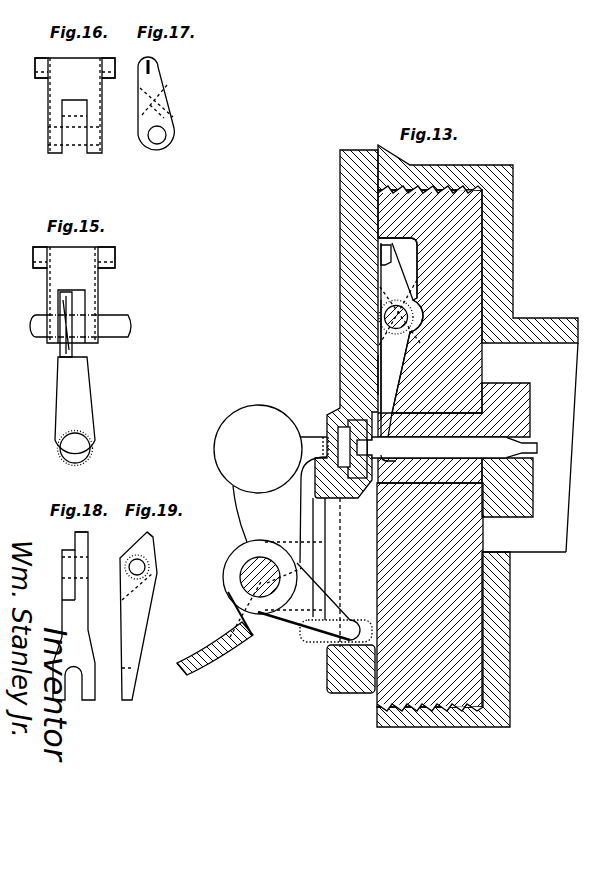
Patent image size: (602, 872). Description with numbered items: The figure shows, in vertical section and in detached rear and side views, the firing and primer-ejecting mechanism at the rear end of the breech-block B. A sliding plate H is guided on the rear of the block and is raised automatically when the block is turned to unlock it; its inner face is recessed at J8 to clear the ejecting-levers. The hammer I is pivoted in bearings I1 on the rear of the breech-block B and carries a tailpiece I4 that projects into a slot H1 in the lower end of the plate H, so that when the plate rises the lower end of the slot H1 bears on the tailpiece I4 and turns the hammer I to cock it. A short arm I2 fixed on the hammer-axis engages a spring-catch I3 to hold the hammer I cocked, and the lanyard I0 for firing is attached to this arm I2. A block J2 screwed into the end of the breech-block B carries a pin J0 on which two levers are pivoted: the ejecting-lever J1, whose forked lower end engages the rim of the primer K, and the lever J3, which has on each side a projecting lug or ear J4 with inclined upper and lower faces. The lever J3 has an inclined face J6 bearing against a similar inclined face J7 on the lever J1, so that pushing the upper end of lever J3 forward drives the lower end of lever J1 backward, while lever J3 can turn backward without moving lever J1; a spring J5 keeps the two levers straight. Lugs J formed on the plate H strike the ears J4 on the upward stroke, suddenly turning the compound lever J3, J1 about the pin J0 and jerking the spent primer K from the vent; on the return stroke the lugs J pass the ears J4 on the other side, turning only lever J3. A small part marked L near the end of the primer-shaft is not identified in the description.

In FIG. 13, the breech-block B is at (477, 436).
In FIG. 13, the sliding plate H is at (346, 324).
In FIG. 13, the slot H1 is at (344, 595).
In FIG. 13, the hammer I is at (270, 484).
In FIG. 13, the lanyard I0 is at (197, 664).
In FIG. 13, the bearings I1 is at (291, 590).
In FIG. 13, the short arm I2 is at (248, 641).
In FIG. 13, the spring-catch I3 is at (297, 629).
In FIG. 13, the tailpiece I4 is at (301, 592).
In FIG. 13, the lugs J is at (372, 360).
In FIG. 15, the pin J0 is at (80, 326).
In FIG. 13, the pin J0 is at (383, 316).
In FIG. 15, the ejecting-lever J1 is at (75, 405).
In FIG. 18, the ejecting-lever J1 is at (74, 616).
In FIG. 19, the ejecting-lever J1 is at (138, 616).
In FIG. 13, the ejecting-lever J1 is at (400, 352).
In FIG. 13, the block J2 is at (453, 448).
In FIG. 16, the lever J3 is at (75, 105).
In FIG. 15, the lever J3 is at (74, 295).
In FIG. 13, the lever J3 is at (397, 268).
In FIG. 16, the lug or ear J4 is at (40, 62).
In FIG. 17, the lug or ear J4 is at (146, 66).
In FIG. 15, the lug or ear J4 is at (43, 250).
In FIG. 13, the lug or ear J4 is at (380, 250).
In FIG. 15, the spring J5 is at (60, 347).
In FIG. 13, the spring J5 is at (306, 490).
In FIG. 16, the inclined face J6 is at (82, 120).
In FIG. 17, the inclined face J6 is at (153, 112).
In FIG. 18, the inclined face J7 is at (83, 537).
In FIG. 19, the inclined face J7 is at (140, 530).
In FIG. 13, the recess J8 is at (379, 373).
In FIG. 15, the primer K is at (75, 448).
In FIG. 13, the primer K is at (452, 447).
In FIG. 13, the nut L is at (345, 449).